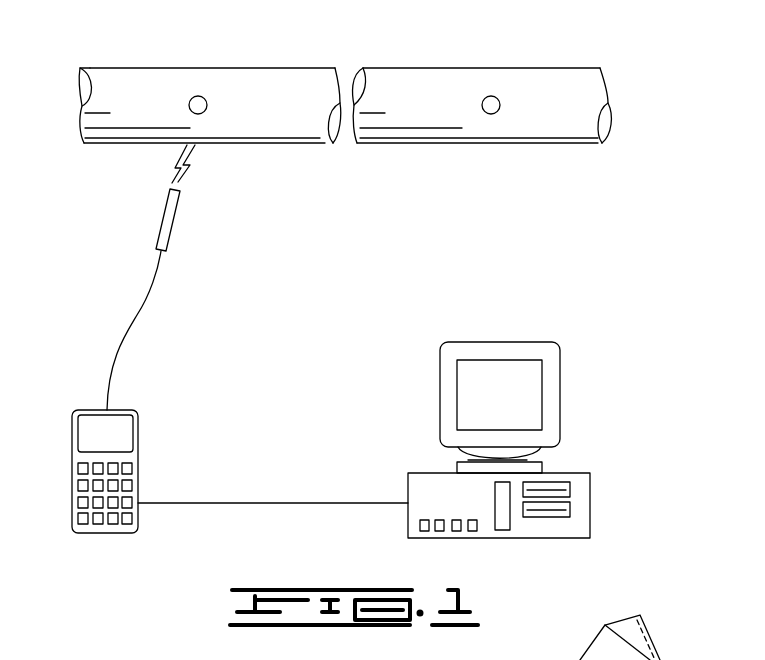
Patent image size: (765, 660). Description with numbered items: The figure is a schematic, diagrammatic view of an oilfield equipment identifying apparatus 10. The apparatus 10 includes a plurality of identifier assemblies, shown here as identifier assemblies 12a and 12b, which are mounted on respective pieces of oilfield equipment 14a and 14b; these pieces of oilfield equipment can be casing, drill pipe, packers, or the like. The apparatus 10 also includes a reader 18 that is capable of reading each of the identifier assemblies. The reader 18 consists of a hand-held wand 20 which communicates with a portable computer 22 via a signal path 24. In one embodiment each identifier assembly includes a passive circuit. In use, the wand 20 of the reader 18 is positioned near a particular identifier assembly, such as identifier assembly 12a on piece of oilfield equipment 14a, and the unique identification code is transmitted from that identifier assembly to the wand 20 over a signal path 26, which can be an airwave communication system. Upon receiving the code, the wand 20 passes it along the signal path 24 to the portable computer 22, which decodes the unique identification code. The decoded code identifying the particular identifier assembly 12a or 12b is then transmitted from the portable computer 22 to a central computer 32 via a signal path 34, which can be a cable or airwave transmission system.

The oilfield equipment identifying apparatus 10 is at (606, 230).
The identifier assembly 12a is at (201, 92).
The identifier assembly 12b is at (494, 92).
The piece of oilfield equipment 14a is at (313, 62).
The piece of oilfield equipment 14b is at (450, 62).
The reader 18 is at (100, 471).
The hand-held wand 20 is at (163, 218).
The portable computer 22 is at (138, 428).
The signal path 24 is at (140, 315).
The signal path 26 is at (191, 168).
The central computer 32 is at (590, 503).
The signal path 34 is at (275, 503).